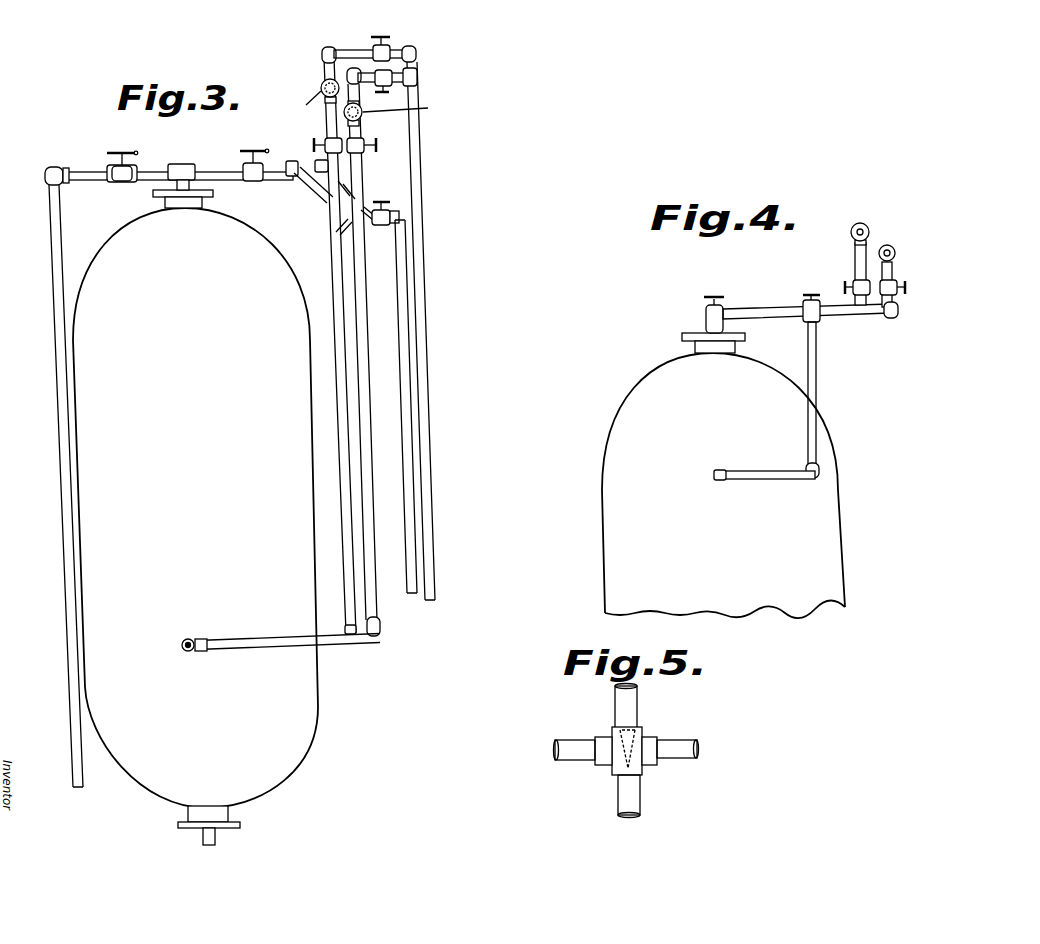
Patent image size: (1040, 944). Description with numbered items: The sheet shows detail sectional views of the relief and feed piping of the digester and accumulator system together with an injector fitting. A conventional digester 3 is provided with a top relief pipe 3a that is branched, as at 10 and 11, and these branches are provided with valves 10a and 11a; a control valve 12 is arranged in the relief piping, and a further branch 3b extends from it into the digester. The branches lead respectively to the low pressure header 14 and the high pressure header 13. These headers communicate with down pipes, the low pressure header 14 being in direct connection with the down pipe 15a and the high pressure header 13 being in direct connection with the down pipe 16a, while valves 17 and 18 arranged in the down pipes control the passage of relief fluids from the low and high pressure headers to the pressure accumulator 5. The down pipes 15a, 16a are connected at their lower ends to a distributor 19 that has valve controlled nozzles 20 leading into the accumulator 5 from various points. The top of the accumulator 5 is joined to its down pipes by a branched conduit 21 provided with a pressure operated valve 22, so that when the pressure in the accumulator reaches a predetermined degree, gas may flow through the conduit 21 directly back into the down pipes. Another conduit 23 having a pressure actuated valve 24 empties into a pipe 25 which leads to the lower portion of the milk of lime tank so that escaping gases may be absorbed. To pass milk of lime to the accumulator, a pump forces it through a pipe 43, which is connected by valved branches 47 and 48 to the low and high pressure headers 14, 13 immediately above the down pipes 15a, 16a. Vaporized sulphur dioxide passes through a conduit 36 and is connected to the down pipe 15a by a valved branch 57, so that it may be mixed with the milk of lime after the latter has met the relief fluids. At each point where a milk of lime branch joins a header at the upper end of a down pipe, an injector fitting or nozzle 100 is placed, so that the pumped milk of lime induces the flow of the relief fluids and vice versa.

In FIG. 4, the digester 3 is at (831, 534).
In FIG. 4, the relief pipe 3a is at (757, 309).
In FIG. 4, the branch pipe into digester 3b is at (818, 380).
In FIG. 3, the pressure accumulator 5 is at (262, 256).
In FIG. 4, the branch 10 is at (855, 255).
In FIG. 4, the valve 10a is at (855, 285).
In FIG. 4, the branch 11 is at (893, 270).
In FIG. 4, the valve 11a is at (897, 290).
In FIG. 4, the control valve 12 is at (820, 316).
In FIG. 3, the high pressure header 13 is at (361, 116).
In FIG. 4, the high pressure header 13 is at (896, 250).
In FIG. 3, the low pressure header 14 is at (321, 85).
In FIG. 4, the low pressure header 14 is at (869, 229).
In FIG. 5, the low pressure header 14 is at (682, 738).
In FIG. 3, the down pipe 15a is at (338, 395).
In FIG. 5, the down pipe 15a is at (640, 800).
In FIG. 3, the down pipe 16a is at (364, 394).
In FIG. 3, the valve 17 is at (318, 140).
In FIG. 3, the valve 18 is at (362, 153).
In FIG. 3, the distributor 19 is at (293, 620).
In FIG. 3, the valve controlled nozzle 20 is at (204, 636).
In FIG. 3, the branched conduit 21 is at (214, 158).
In FIG. 3, the pressure operated valve 22 is at (257, 181).
In FIG. 3, the conduit 23 is at (147, 171).
In FIG. 3, the pressure actuated valve 24 is at (119, 182).
In FIG. 3, the pipe 25 is at (51, 258).
In FIG. 3, the conduit 36 is at (404, 313).
In FIG. 3, the pipe 43 is at (415, 52).
In FIG. 3, the valved branch 47 is at (352, 52).
In FIG. 5, the valved branch 47 is at (630, 705).
In FIG. 3, the valved branch 48 is at (388, 94).
In FIG. 3, the valved branch 57 is at (386, 226).
In FIG. 5, the injector fitting 100 is at (645, 758).